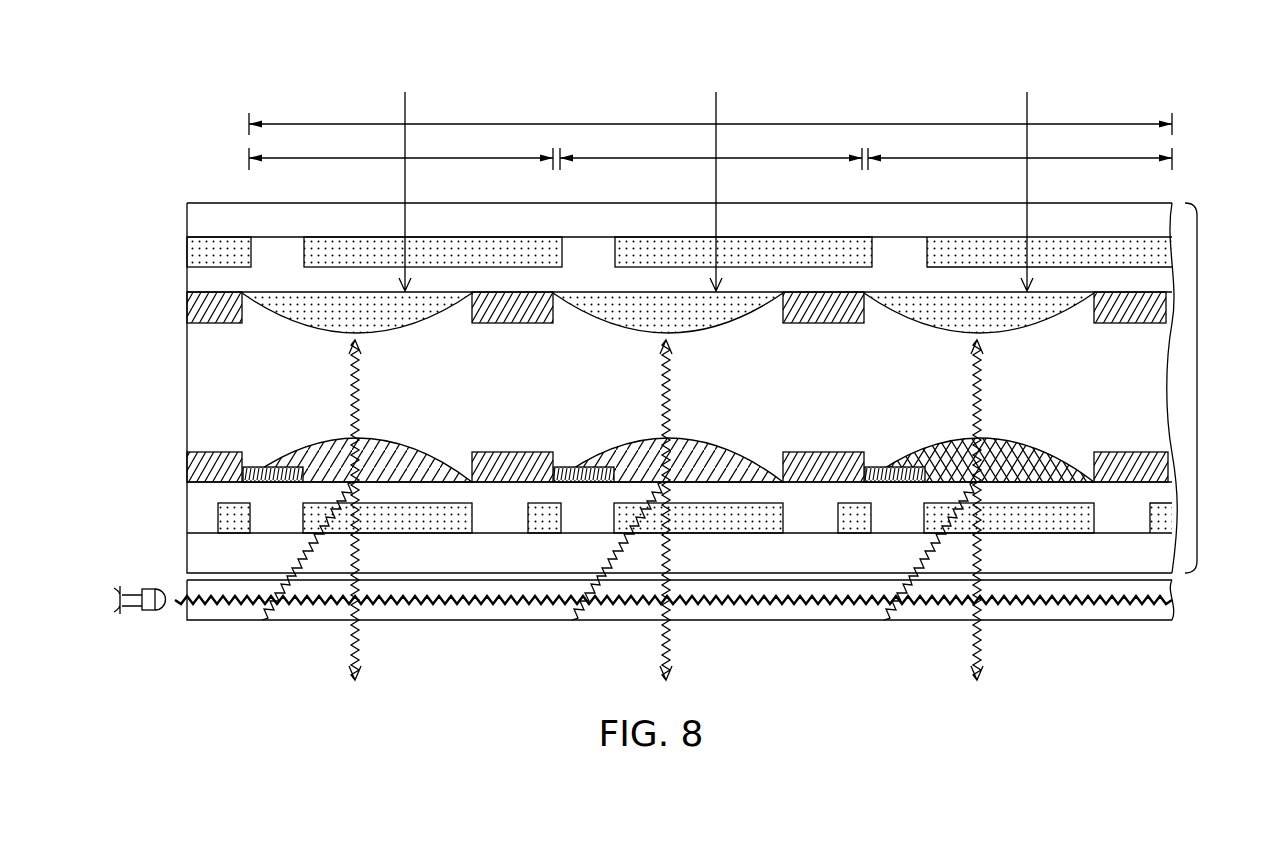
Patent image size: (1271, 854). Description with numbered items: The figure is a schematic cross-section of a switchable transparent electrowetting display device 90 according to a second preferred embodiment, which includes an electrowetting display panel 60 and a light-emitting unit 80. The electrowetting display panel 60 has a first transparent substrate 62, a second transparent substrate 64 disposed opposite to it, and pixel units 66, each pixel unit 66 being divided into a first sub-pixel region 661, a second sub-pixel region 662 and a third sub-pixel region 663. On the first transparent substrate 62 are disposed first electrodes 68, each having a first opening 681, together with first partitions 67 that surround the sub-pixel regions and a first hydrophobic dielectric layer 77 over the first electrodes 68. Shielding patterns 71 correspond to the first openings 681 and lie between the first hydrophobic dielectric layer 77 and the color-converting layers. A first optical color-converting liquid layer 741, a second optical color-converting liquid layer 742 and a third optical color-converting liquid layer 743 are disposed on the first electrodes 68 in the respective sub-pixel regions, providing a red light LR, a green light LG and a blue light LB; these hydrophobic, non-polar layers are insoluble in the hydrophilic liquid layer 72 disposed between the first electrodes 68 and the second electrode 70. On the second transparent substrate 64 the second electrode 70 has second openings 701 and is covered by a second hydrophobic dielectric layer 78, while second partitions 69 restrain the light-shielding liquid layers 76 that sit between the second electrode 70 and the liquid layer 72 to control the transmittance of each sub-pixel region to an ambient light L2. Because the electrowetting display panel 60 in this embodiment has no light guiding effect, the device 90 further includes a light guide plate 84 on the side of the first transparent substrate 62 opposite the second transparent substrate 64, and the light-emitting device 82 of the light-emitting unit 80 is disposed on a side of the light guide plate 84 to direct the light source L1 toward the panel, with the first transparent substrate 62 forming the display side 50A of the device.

The switchable transparent electrowetting display device 90 is at (198, 124).
The light-emitting unit 80 is at (138, 575).
The light-emitting device 82 is at (156, 612).
The electrowetting display panel 60 is at (1197, 382).
The first transparent substrate 62 is at (709, 563).
The second transparent substrate 64 is at (692, 226).
The pixel unit 66 is at (710, 117).
The first sub-pixel region 661 is at (401, 151).
The second sub-pixel region 662 is at (711, 151).
The third sub-pixel region 663 is at (1020, 151).
The first partition 67 is at (221, 477).
The first electrode 68 is at (399, 529).
The first opening 681 is at (699, 503).
The second partition 69 is at (222, 318).
The second electrode 70 is at (224, 261).
The second opening 701 is at (587, 272).
The shielding pattern 71 is at (272, 458).
The liquid layer 72 is at (187, 387).
The first optical color-converting liquid layer 741 is at (414, 472).
The second optical color-converting liquid layer 742 is at (725, 472).
The third optical color-converting liquid layer 743 is at (1036, 472).
The light-shielding liquid layer 76 is at (369, 320).
The first hydrophobic dielectric layer 77 is at (200, 518).
The second hydrophobic dielectric layer 78 is at (187, 280).
The light guide plate 84 is at (709, 608).
The display side 50A is at (512, 575).
The light source L1 is at (218, 612).
The ambient light L2 is at (405, 100).
The red light LR is at (360, 383).
The green light LG is at (671, 383).
The blue light LB is at (982, 383).